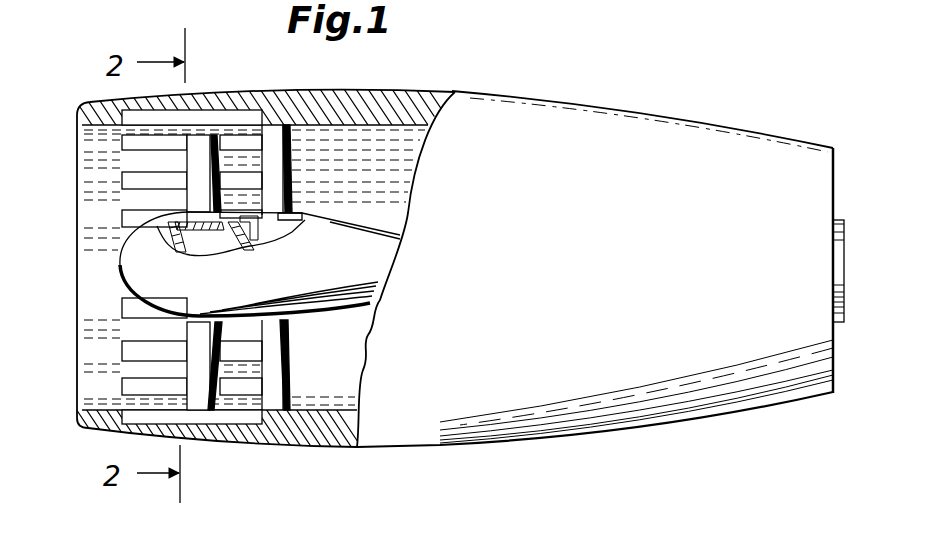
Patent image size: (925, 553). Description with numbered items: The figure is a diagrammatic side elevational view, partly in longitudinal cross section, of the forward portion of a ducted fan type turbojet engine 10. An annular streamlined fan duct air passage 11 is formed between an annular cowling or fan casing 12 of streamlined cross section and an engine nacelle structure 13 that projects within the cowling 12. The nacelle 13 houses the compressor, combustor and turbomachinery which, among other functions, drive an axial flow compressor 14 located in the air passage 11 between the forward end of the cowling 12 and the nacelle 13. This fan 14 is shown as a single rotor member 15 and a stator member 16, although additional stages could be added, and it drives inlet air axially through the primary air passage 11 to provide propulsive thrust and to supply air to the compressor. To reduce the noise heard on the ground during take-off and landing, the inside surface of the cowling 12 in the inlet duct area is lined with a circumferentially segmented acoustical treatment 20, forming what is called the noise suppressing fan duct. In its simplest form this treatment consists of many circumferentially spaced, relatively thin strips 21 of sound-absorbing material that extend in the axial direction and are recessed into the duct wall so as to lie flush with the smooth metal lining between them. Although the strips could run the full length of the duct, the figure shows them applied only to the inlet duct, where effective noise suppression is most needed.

The forward portion of ducted fan type turbojet engine 10 is at (375, 88).
The fan duct air passage 11 is at (100, 267).
The cowling 12 is at (237, 97).
The engine nacelle structure 13 is at (365, 268).
The axial flow compressor 14 is at (300, 194).
The rotor member 15 is at (200, 332).
The stator member 16 is at (275, 333).
The acoustical treatment 20 is at (107, 350).
The strips 21 is at (122, 223).